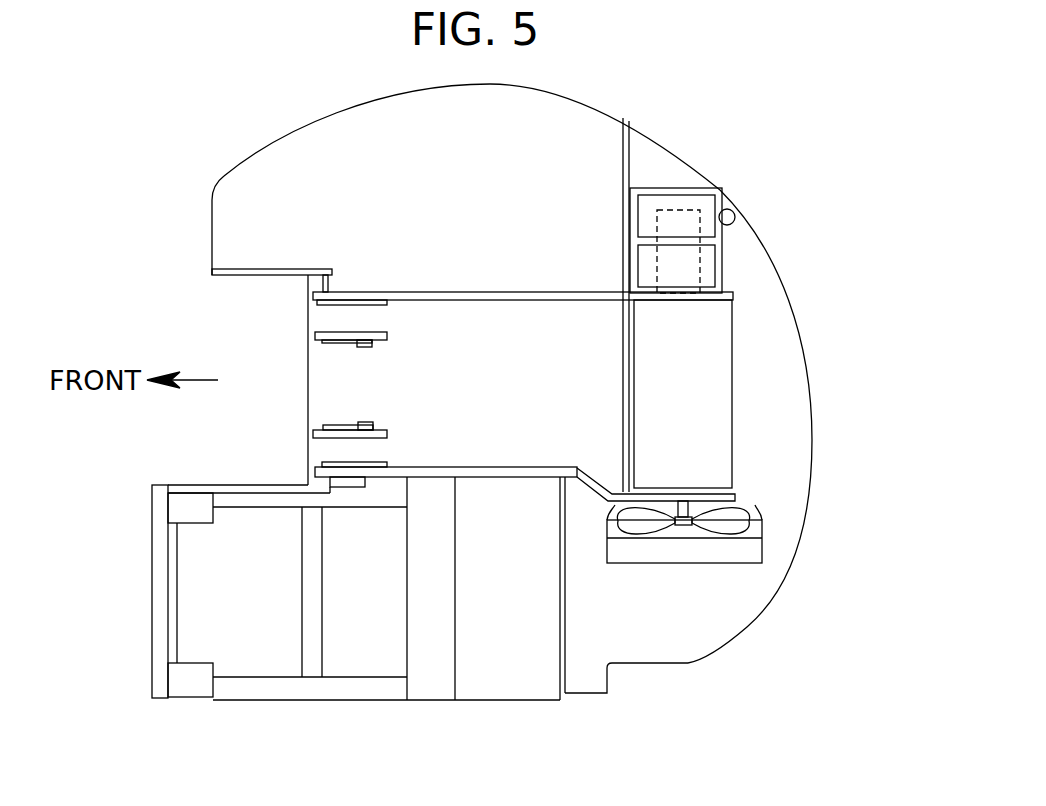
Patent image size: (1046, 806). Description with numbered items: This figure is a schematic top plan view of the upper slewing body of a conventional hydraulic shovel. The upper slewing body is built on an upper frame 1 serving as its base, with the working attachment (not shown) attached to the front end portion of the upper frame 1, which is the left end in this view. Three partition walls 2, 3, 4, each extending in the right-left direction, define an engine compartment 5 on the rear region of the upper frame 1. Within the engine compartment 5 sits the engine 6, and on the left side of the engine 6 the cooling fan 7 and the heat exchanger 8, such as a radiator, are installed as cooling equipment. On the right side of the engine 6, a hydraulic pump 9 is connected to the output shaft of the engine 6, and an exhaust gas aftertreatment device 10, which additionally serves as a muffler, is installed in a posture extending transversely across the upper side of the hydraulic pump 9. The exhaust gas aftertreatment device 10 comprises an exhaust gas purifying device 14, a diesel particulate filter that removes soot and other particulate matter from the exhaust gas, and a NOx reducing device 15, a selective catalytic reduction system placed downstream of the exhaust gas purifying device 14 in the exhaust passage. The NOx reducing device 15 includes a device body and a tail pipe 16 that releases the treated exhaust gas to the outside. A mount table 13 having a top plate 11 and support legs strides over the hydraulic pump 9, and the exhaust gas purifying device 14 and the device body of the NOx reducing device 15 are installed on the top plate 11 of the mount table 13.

The upper frame 1 is at (674, 678).
The partition wall 2 is at (560, 588).
The partition wall 3 is at (622, 395).
The partition wall 4 is at (622, 140).
The engine compartment 5 is at (793, 352).
The engine 6 is at (732, 415).
The cooling fan 7 is at (662, 533).
The heat exchanger 8 is at (762, 547).
The hydraulic pump 9 is at (693, 208).
The exhaust gas aftertreatment device 10 is at (604, 239).
The top plate 11 is at (658, 206).
The mount table 13 is at (658, 190).
The exhaust gas purifying device 14 is at (637, 260).
The NOx reducing device 15 is at (637, 213).
The tail pipe 16 is at (743, 213).